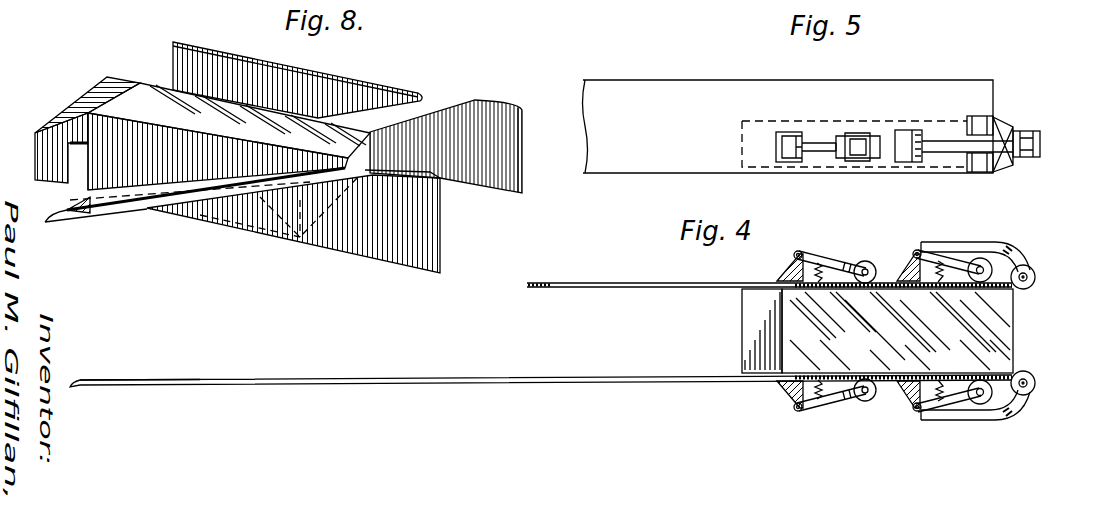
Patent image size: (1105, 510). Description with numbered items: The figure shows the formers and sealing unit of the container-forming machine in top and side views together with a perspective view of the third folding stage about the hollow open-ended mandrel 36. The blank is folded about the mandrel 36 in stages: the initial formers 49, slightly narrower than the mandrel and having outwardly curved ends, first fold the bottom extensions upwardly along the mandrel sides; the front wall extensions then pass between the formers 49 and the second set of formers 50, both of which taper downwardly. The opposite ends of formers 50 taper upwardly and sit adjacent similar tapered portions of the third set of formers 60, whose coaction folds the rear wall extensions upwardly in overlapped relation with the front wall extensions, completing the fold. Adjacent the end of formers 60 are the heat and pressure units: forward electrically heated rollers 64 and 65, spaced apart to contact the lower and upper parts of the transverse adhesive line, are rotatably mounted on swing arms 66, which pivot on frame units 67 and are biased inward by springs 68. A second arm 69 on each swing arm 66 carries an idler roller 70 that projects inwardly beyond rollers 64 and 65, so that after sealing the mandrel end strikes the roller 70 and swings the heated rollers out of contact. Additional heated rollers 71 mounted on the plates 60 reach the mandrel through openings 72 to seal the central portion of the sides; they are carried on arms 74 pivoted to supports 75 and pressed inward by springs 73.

In FIG. 8, the hollow open-ended mandrel 36 is at (87, 126).
In FIG. 5, the hollow open-ended mandrel 36 is at (742, 133).
In FIG. 4, the initial former 49 is at (146, 378).
In FIG. 8, the second set of formers 50 is at (268, 68).
In FIG. 4, the second set of formers 50 is at (359, 378).
In FIG. 8, the third set of formers 60 is at (484, 102).
In FIG. 5, the third set of formers 60 is at (871, 92).
In FIG. 4, the third set of formers 60 is at (614, 288).
In FIG. 5, the forward electrically heated roller 64 is at (995, 168).
In FIG. 4, the forward electrically heated roller 64 is at (986, 262).
In FIG. 5, the forward electrically heated roller 65 is at (992, 121).
In FIG. 4, the swing arm 66 is at (955, 262).
In FIG. 5, the frame unit 67 is at (900, 138).
In FIG. 4, the frame unit 67 is at (912, 260).
In FIG. 4, the spring 68 is at (942, 373).
In FIG. 5, the second arm 69 is at (937, 148).
In FIG. 4, the second arm 69 is at (991, 243).
In FIG. 5, the idler roller 70 is at (1042, 143).
In FIG. 4, the idler roller 70 is at (1037, 276).
In FIG. 5, the heated roller 71 is at (856, 140).
In FIG. 4, the heated roller 71 is at (862, 260).
In FIG. 4, the opening 72 is at (851, 377).
In FIG. 4, the spring 73 is at (822, 284).
In FIG. 5, the arm 74 is at (814, 140).
In FIG. 4, the arm 74 is at (812, 256).
In FIG. 5, the support 75 is at (778, 130).
In FIG. 4, the support 75 is at (790, 262).